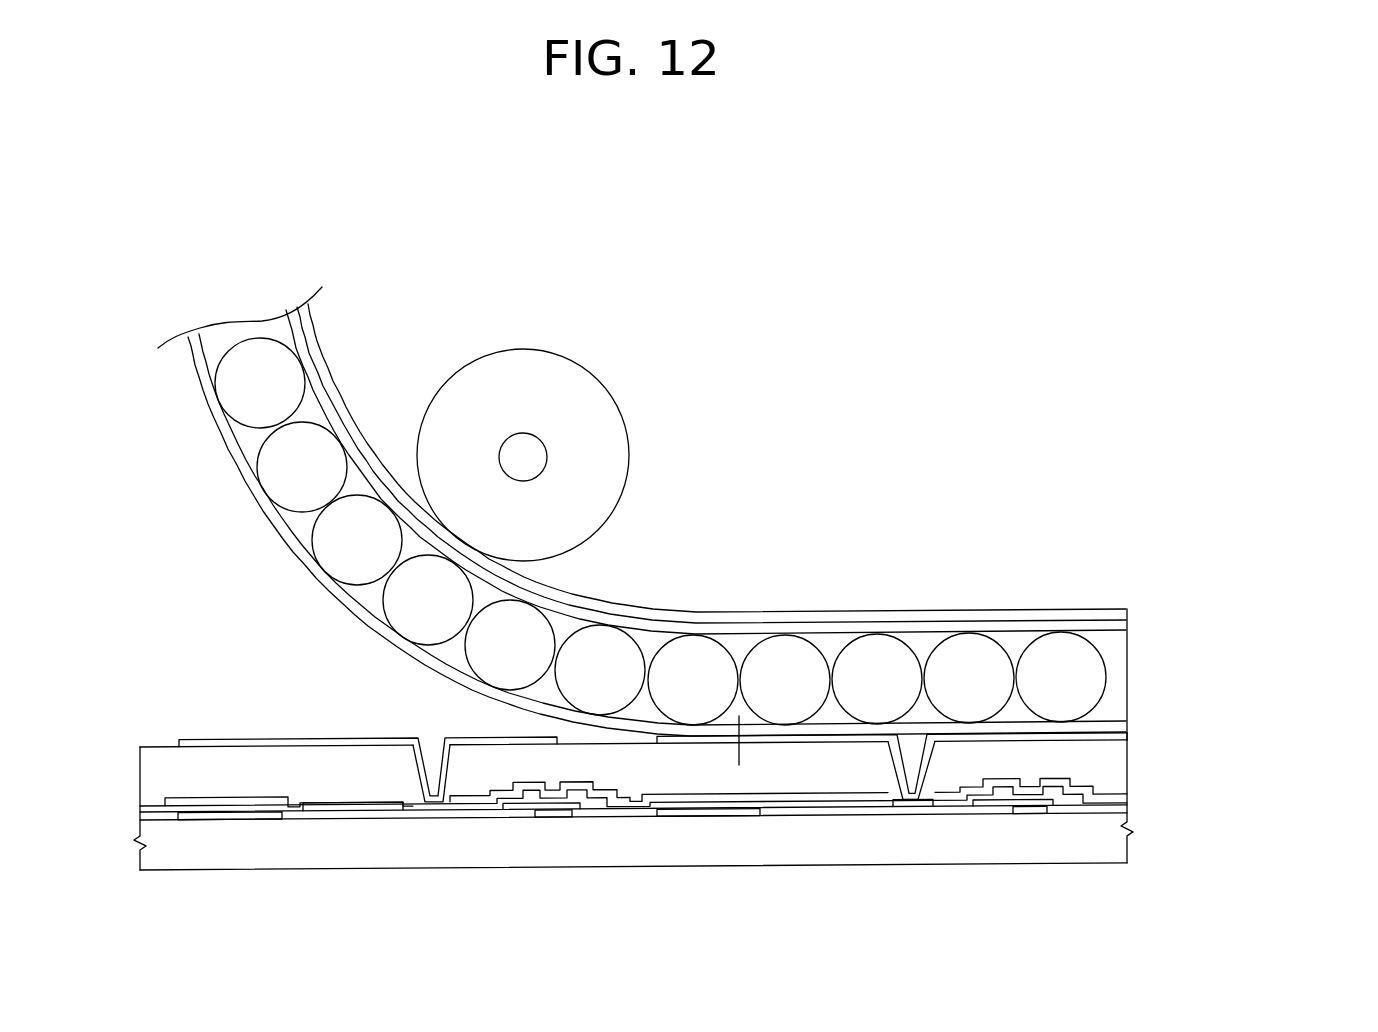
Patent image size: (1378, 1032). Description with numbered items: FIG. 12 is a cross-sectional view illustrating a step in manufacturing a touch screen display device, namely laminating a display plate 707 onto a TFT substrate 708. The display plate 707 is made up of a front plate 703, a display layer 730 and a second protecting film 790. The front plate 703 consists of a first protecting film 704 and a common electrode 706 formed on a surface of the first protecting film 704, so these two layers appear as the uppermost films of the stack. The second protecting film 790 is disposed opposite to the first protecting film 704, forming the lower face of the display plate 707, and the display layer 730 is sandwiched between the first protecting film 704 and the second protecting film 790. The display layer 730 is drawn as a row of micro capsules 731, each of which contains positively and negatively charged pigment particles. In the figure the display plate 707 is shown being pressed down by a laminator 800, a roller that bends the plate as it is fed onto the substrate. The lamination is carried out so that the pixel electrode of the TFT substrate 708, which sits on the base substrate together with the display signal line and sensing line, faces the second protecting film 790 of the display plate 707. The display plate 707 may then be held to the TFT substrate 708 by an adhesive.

The laminator 800 is at (604, 357).
The second protecting film 790 is at (228, 430).
The micro capsules 731 is at (970, 652).
The display layer 730 is at (706, 531).
The first protecting film 704 is at (1127, 612).
The common electrode 706 is at (1127, 624).
The front plate 703 is at (781, 469).
The display plate 707 is at (722, 522).
The TFT substrate 708 is at (689, 827).